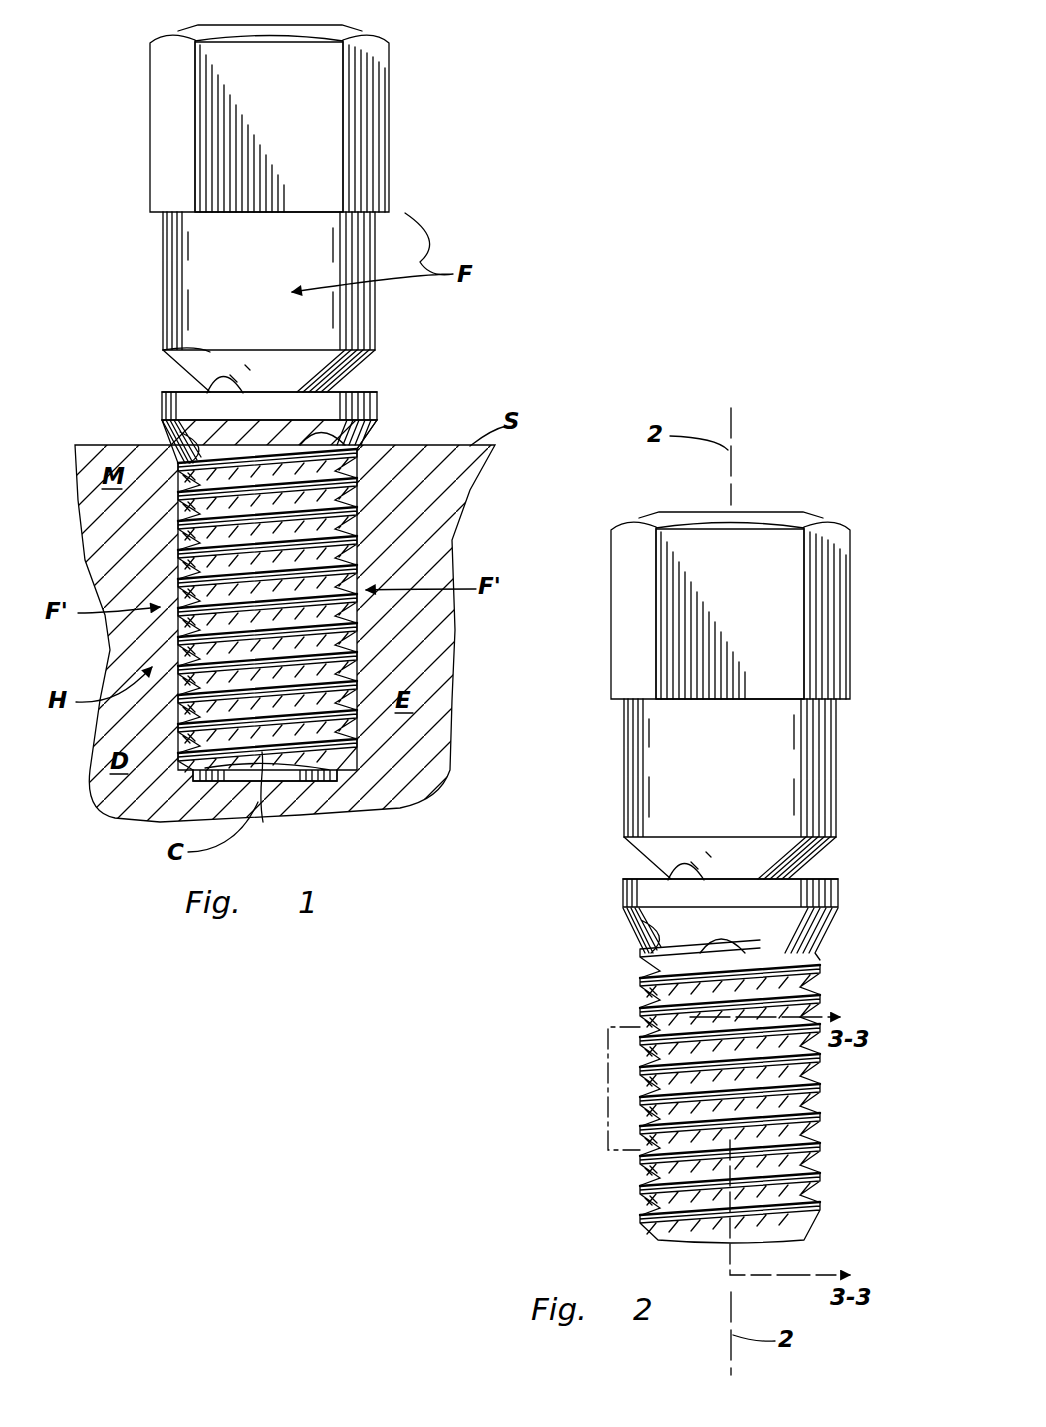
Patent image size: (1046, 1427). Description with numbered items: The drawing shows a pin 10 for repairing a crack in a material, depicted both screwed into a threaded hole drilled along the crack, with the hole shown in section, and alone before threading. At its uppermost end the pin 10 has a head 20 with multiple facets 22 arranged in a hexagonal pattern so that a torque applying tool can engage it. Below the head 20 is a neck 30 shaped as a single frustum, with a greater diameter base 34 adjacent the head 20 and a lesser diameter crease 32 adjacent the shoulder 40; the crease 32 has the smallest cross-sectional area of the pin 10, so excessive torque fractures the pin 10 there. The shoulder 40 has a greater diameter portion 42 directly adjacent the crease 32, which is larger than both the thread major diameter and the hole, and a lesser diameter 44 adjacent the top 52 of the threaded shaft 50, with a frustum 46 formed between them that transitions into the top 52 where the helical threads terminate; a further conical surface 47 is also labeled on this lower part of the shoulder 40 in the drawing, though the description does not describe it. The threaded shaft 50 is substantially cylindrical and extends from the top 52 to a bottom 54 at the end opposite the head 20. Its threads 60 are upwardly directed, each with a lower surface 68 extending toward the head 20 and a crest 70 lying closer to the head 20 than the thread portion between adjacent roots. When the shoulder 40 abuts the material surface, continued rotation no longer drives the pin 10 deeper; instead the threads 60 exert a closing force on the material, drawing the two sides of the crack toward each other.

In FIG. 1, the pin 10 is at (443, 71).
In FIG. 2, the pin 10 is at (753, 462).
In FIG. 1, the head 20 is at (420, 118).
In FIG. 2, the head 20 is at (812, 513).
In FIG. 1, the facets 22 is at (295, 117).
In FIG. 2, the facets 22 is at (830, 625).
In FIG. 1, the neck 30 is at (375, 382).
In FIG. 2, the neck 30 is at (823, 870).
In FIG. 1, the crease 32 is at (238, 381).
In FIG. 2, the crease 32 is at (722, 876).
In FIG. 1, the base 34 is at (205, 346).
In FIG. 1, the shoulder 40 is at (398, 408).
In FIG. 2, the shoulder 40 is at (815, 946).
In FIG. 1, the greater diameter portion 42 is at (170, 408).
In FIG. 2, the greater diameter portion 42 is at (838, 910).
In FIG. 1, the lesser diameter 44 is at (182, 440).
In FIG. 1, the frustum 46 is at (263, 452).
In FIG. 2, the frustum 46 is at (668, 925).
In FIG. 2, the conical seating surface 47 is at (798, 956).
In FIG. 1, the threaded shaft 50 is at (267, 610).
In FIG. 2, the threaded shaft 50 is at (679, 1091).
In FIG. 1, the top 52 is at (360, 445).
In FIG. 2, the top 52 is at (700, 944).
In FIG. 1, the bottom 54 is at (302, 778).
In FIG. 1, the threads 60 is at (362, 560).
In FIG. 2, the threads 60 is at (690, 1200).
In FIG. 2, the lower surface 68 is at (818, 1108).
In FIG. 2, the crest 70 is at (815, 1087).